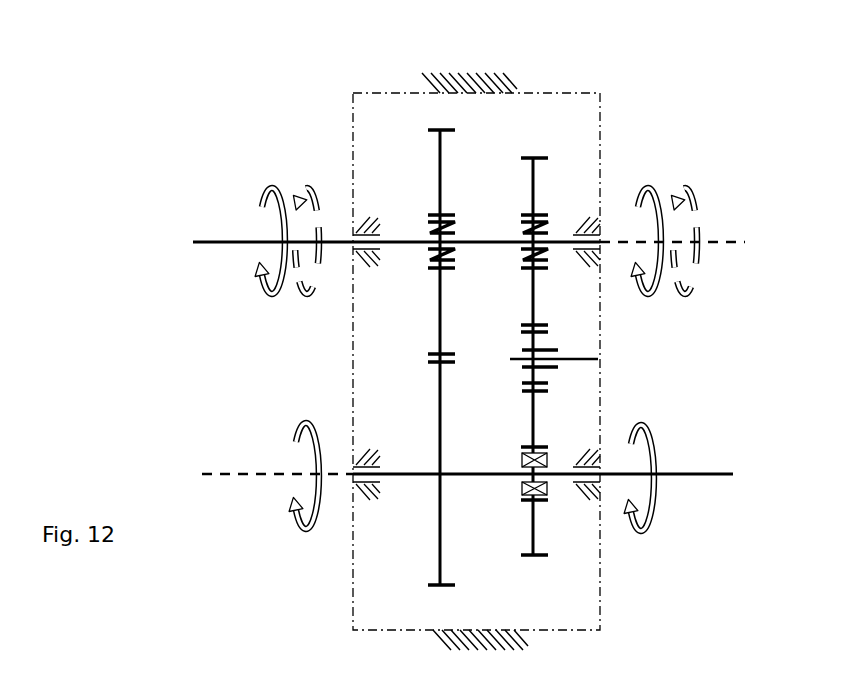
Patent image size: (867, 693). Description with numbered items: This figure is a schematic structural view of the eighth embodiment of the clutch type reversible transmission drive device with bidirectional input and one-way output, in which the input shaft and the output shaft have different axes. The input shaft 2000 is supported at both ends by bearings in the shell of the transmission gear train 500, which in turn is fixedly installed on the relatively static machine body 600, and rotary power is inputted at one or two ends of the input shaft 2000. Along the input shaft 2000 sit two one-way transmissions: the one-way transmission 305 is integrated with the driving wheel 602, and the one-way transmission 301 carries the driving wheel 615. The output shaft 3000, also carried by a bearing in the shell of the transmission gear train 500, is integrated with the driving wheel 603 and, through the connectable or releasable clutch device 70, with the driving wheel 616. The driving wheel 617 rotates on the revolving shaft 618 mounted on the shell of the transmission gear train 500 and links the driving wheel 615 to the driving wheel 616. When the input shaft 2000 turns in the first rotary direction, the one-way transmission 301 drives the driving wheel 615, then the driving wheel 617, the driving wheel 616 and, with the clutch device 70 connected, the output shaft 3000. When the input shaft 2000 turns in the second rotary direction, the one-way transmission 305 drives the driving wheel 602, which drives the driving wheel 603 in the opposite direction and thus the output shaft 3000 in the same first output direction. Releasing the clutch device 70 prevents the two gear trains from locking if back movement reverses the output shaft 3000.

The machine body 600 is at (502, 90).
The shell of the transmission gear train 500 is at (353, 158).
The input shaft 2000 is at (242, 240).
The output shaft 3000 is at (267, 472).
The driving wheel 602 is at (440, 163).
The driving wheel 603 is at (440, 523).
The driving wheel 615 is at (540, 158).
The driving wheel 616 is at (533, 533).
The driving wheel 617 is at (522, 383).
The revolving shaft 618 is at (570, 363).
The one-way transmission 305 is at (455, 225).
The one-way transmission 301 is at (548, 225).
The connectable or releasable clutch device 70 is at (520, 460).